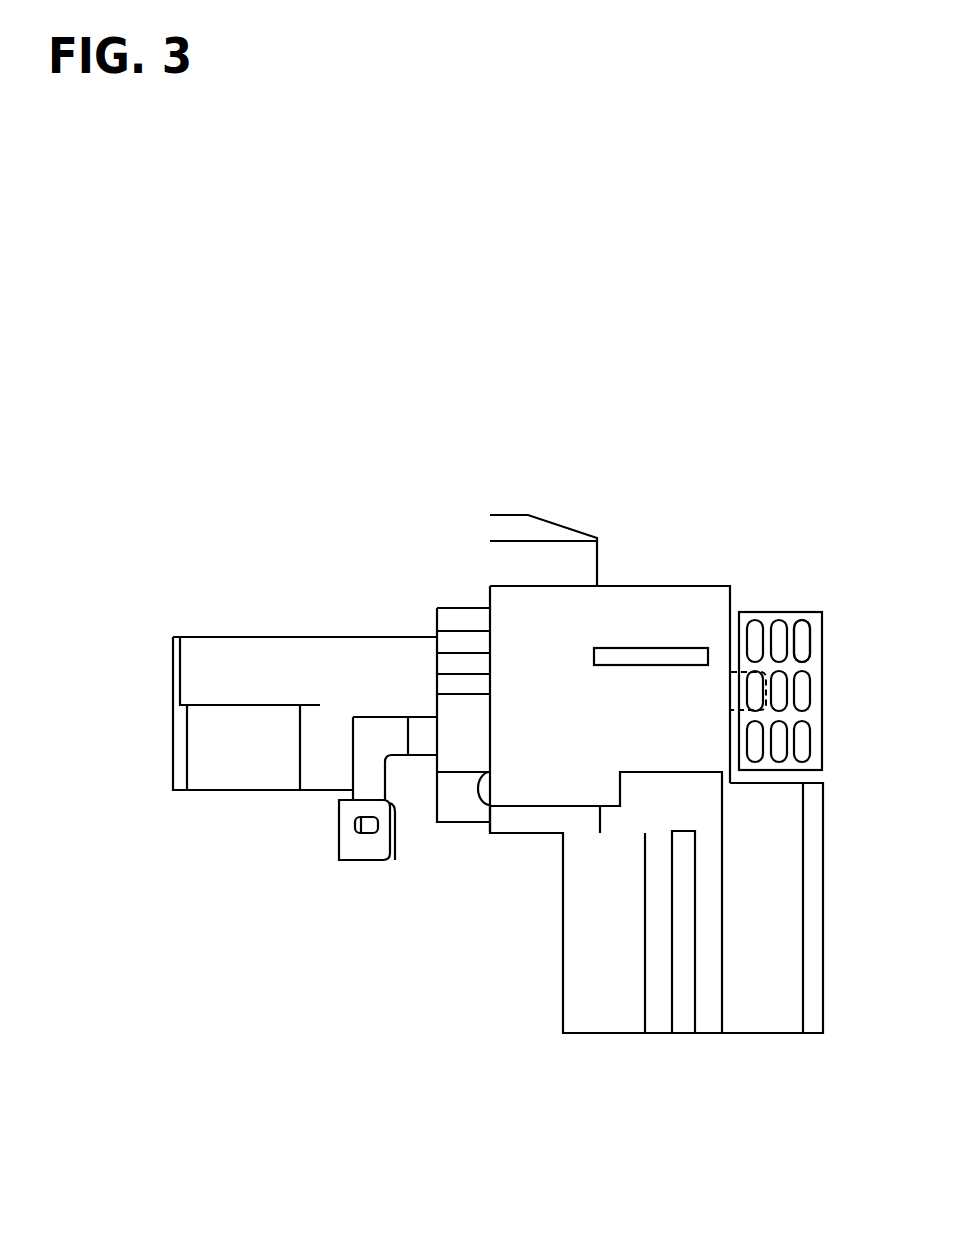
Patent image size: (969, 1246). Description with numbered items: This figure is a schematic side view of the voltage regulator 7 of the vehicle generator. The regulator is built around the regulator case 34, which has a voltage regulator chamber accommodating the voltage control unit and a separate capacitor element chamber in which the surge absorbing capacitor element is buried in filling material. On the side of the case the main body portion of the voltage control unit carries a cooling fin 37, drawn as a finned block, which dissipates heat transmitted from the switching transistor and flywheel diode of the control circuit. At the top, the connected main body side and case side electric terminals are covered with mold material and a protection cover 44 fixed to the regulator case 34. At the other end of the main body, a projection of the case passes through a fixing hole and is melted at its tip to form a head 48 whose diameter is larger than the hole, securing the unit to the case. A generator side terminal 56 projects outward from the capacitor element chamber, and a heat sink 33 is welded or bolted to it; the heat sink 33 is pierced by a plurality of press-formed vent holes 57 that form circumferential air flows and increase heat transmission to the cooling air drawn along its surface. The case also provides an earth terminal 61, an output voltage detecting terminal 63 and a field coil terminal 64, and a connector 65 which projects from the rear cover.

The voltage regulator 7 is at (707, 460).
The heat sink 33 is at (792, 618).
The regulator case 34 is at (627, 620).
The cooling fin 37 is at (453, 613).
The protection cover 44 is at (545, 558).
The head 48 is at (484, 789).
The generator side terminal 56 is at (735, 693).
The vent hole 57 is at (803, 636).
The earth terminal 61 is at (688, 655).
The output voltage detecting terminal 63 is at (355, 848).
The field coil terminal 64 is at (227, 705).
The connector 65 is at (755, 1003).